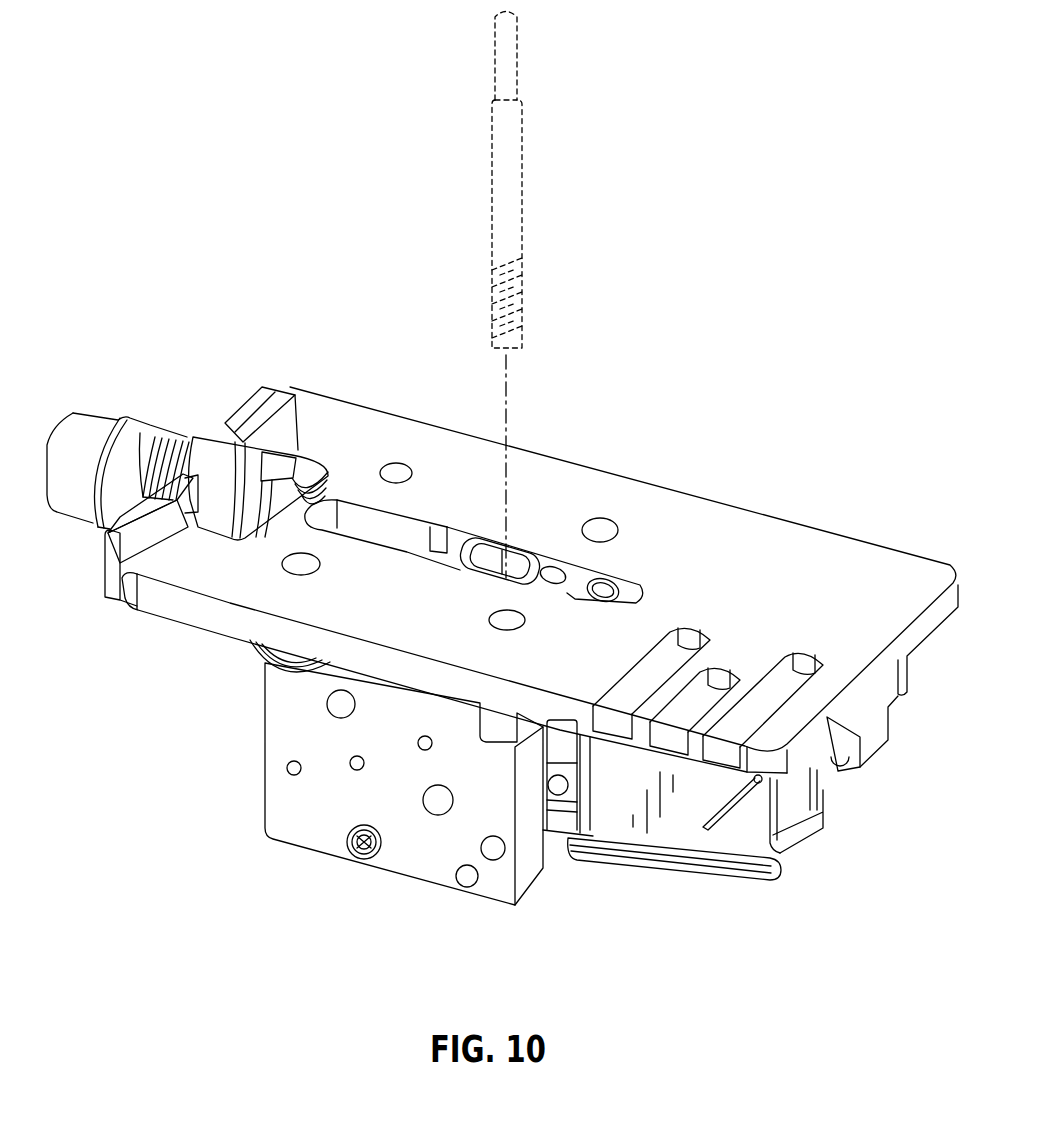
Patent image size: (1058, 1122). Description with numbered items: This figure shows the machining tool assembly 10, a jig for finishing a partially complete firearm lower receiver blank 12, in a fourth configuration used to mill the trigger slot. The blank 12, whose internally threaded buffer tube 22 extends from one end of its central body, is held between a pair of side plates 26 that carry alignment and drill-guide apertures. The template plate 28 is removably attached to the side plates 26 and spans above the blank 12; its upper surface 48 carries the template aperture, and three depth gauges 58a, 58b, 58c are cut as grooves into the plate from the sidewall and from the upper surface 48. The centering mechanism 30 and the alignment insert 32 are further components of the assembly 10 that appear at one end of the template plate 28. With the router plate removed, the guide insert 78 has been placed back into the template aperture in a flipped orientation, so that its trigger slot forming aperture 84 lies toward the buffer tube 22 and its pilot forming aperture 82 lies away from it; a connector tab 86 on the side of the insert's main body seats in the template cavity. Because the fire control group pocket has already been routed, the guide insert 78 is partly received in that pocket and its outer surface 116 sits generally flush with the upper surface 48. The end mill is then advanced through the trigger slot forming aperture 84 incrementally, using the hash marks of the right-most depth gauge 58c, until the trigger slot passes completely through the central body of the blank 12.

The machining tool assembly 10 is at (716, 385).
The blank 12 is at (712, 889).
The buffer tube 22 is at (292, 462).
The side plate 26 is at (294, 836).
The template plate 28 is at (862, 574).
The centering mechanism 30 is at (248, 396).
The alignment insert 32 is at (93, 408).
The upper surface 48 is at (382, 598).
The depth gauge 58a is at (675, 660).
The depth gauge 58b is at (708, 693).
The depth gauge 58c is at (793, 686).
The guide insert 78 is at (636, 480).
The pilot forming aperture 82 is at (553, 576).
The trigger slot forming aperture 84 is at (490, 553).
The connector tab 86 is at (583, 570).
The outer surface 116 is at (612, 583).